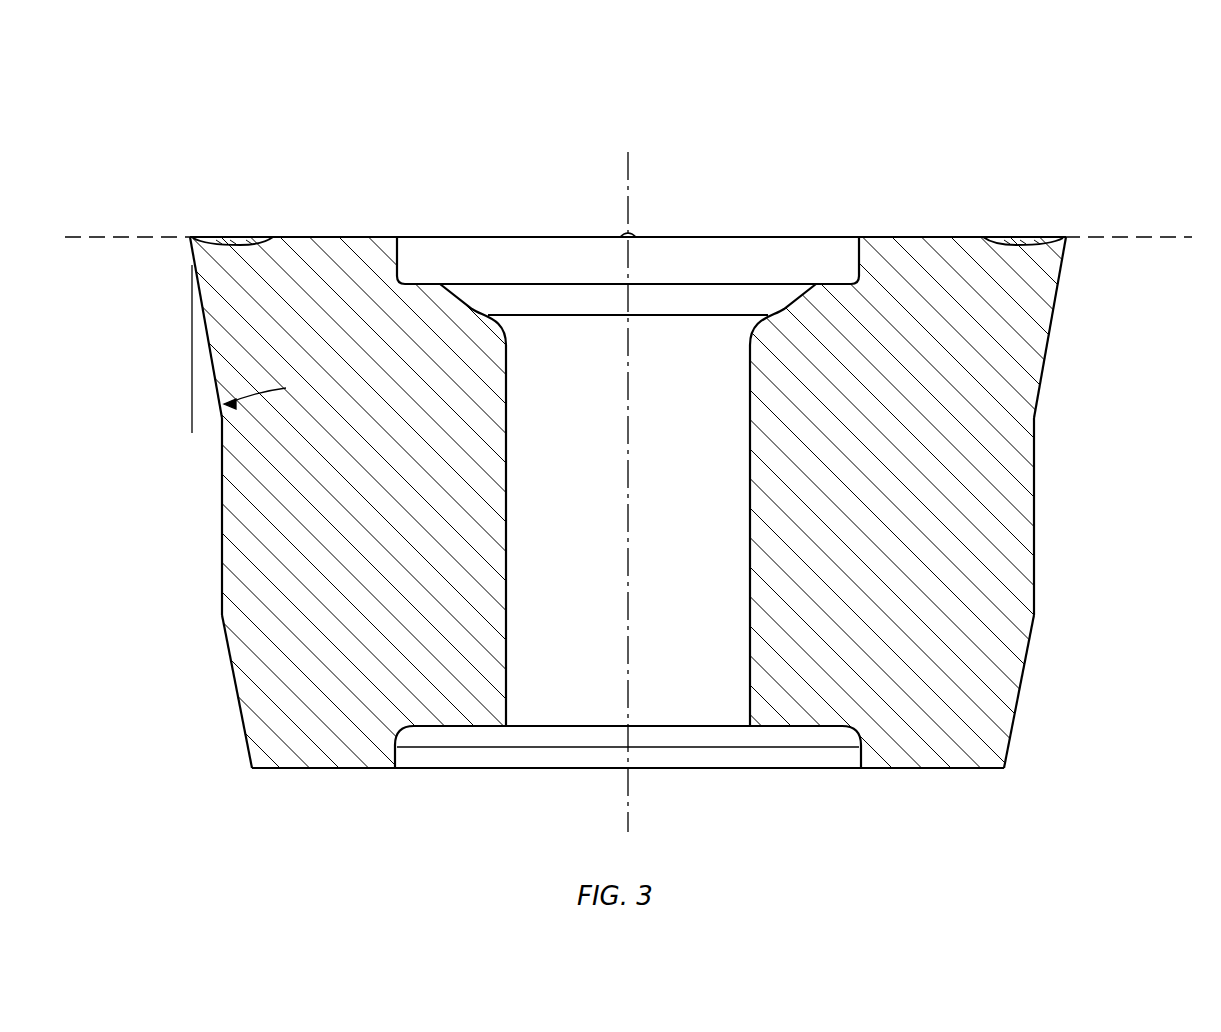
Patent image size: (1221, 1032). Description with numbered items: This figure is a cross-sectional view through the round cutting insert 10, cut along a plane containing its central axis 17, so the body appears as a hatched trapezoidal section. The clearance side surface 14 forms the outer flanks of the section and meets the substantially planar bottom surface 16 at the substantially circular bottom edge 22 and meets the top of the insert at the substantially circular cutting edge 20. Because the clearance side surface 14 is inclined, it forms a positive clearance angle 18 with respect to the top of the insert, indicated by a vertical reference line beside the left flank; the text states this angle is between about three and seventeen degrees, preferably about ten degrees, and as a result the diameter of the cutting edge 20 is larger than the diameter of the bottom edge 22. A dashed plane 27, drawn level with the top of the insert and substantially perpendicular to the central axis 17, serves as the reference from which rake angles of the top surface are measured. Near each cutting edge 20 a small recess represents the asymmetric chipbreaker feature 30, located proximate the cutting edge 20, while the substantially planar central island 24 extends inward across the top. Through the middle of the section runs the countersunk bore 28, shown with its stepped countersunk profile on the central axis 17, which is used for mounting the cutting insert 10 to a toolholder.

The round cutting insert 10 is at (1162, 112).
The clearance side surface 14 is at (1040, 488).
The bottom surface 16 is at (953, 772).
The central axis 17 is at (628, 170).
The clearance angle 18 is at (188, 403).
The cutting edge 20 is at (190, 237).
The bottom edge 22 is at (250, 768).
The central island 24 is at (335, 237).
The plane 27 is at (95, 237).
The countersunk bore 28 is at (750, 420).
The asymmetric chipbreaker feature 30 is at (242, 230).